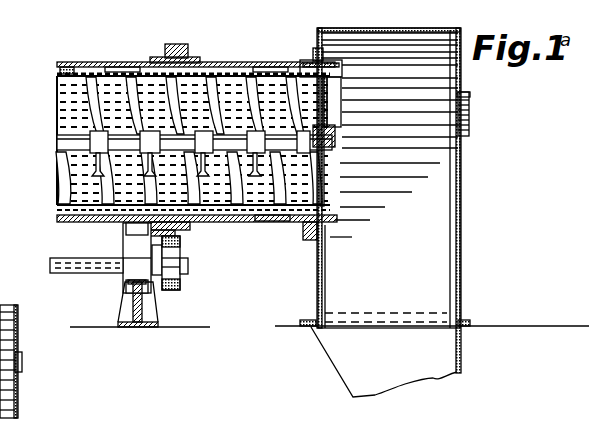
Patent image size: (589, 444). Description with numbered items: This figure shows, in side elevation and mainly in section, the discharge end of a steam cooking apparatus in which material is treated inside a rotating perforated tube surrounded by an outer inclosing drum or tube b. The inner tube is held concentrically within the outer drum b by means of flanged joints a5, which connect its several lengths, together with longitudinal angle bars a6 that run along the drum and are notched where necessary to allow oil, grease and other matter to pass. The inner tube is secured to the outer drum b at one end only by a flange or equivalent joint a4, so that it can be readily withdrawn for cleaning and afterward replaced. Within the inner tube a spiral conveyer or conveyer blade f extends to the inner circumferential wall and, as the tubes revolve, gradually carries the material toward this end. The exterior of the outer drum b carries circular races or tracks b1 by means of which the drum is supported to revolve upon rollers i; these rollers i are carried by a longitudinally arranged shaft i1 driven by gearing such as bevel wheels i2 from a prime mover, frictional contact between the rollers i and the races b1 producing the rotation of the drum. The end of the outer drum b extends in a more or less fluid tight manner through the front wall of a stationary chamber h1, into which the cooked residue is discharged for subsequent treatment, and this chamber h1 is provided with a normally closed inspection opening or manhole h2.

The flange joint a4 is at (124, 67).
The flanged joints a5 is at (42, 236).
The longitudinal angle bars a6 is at (222, 64).
The outer drum b is at (275, 63).
The circular races b1 is at (172, 45).
The spiral conveyer blade f is at (250, 248).
The rollers i is at (176, 287).
The longitudinally arranged shaft i1 is at (73, 274).
The bevel wheels i2 is at (303, 0).
The chamber h1 is at (385, 188).
The inspection opening h2 is at (470, 136).